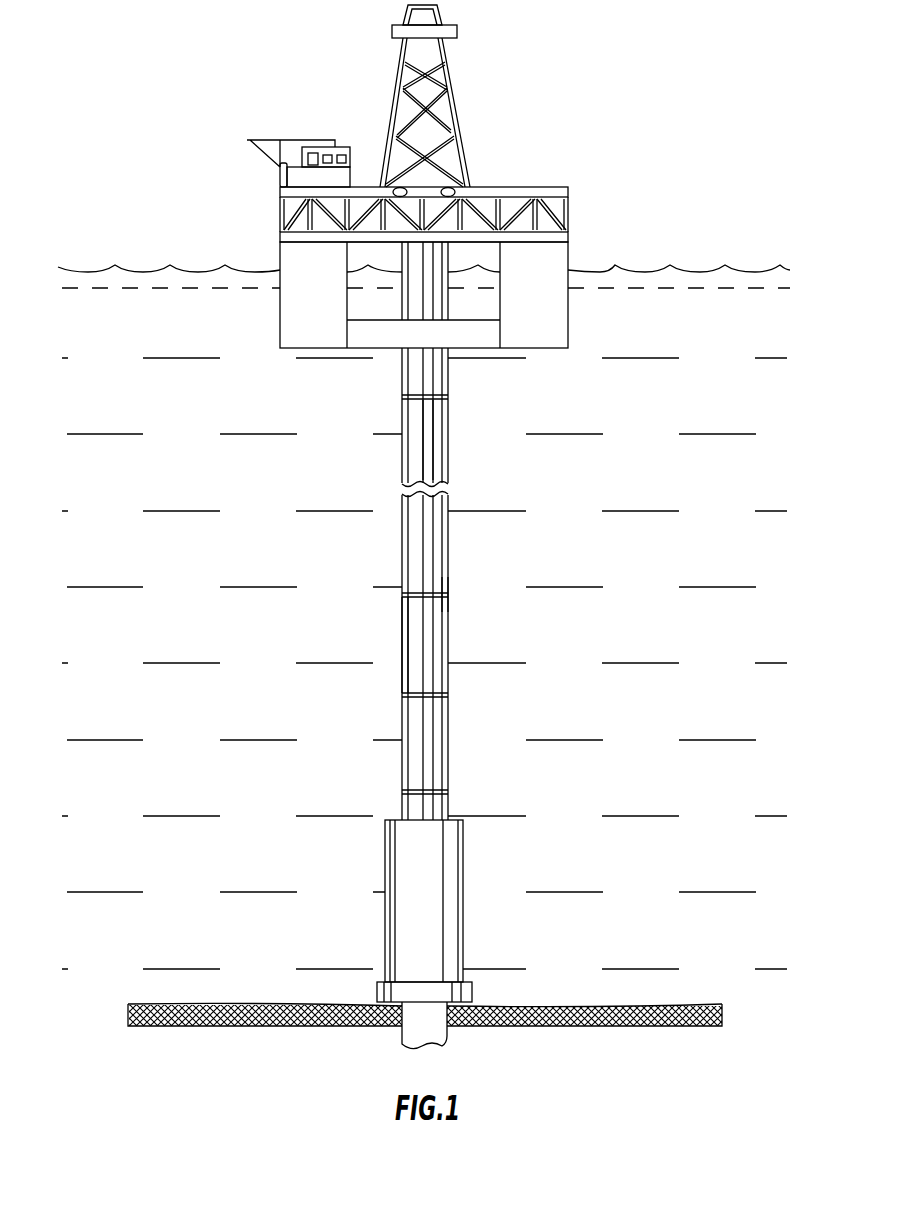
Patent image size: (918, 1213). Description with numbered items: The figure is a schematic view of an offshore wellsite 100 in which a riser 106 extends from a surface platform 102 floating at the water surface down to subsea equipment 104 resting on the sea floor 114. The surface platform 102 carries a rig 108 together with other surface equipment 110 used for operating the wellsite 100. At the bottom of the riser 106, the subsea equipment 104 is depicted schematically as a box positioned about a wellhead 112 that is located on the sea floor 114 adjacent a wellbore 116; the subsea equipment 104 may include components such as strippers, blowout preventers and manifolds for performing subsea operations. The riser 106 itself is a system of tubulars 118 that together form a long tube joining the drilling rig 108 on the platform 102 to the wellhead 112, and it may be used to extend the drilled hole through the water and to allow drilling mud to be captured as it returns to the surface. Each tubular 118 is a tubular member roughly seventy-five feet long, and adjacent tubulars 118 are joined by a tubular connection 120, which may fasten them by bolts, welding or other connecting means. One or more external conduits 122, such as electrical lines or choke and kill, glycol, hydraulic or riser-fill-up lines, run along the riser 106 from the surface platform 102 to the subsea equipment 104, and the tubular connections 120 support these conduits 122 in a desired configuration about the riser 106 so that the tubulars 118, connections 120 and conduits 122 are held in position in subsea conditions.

The wellsite 100 is at (650, 72).
The surface platform 102 is at (280, 253).
The subsea equipment 104 is at (385, 878).
The riser 106 is at (402, 462).
The rig 108 is at (453, 72).
The surface equipment 110 is at (278, 140).
The wellhead 112 is at (470, 992).
The sea floor 114 is at (188, 1003).
The wellbore 116 is at (440, 1048).
The tubulars 118 is at (448, 577).
The tubular connection 120 is at (402, 595).
The external conduits 122 is at (425, 445).